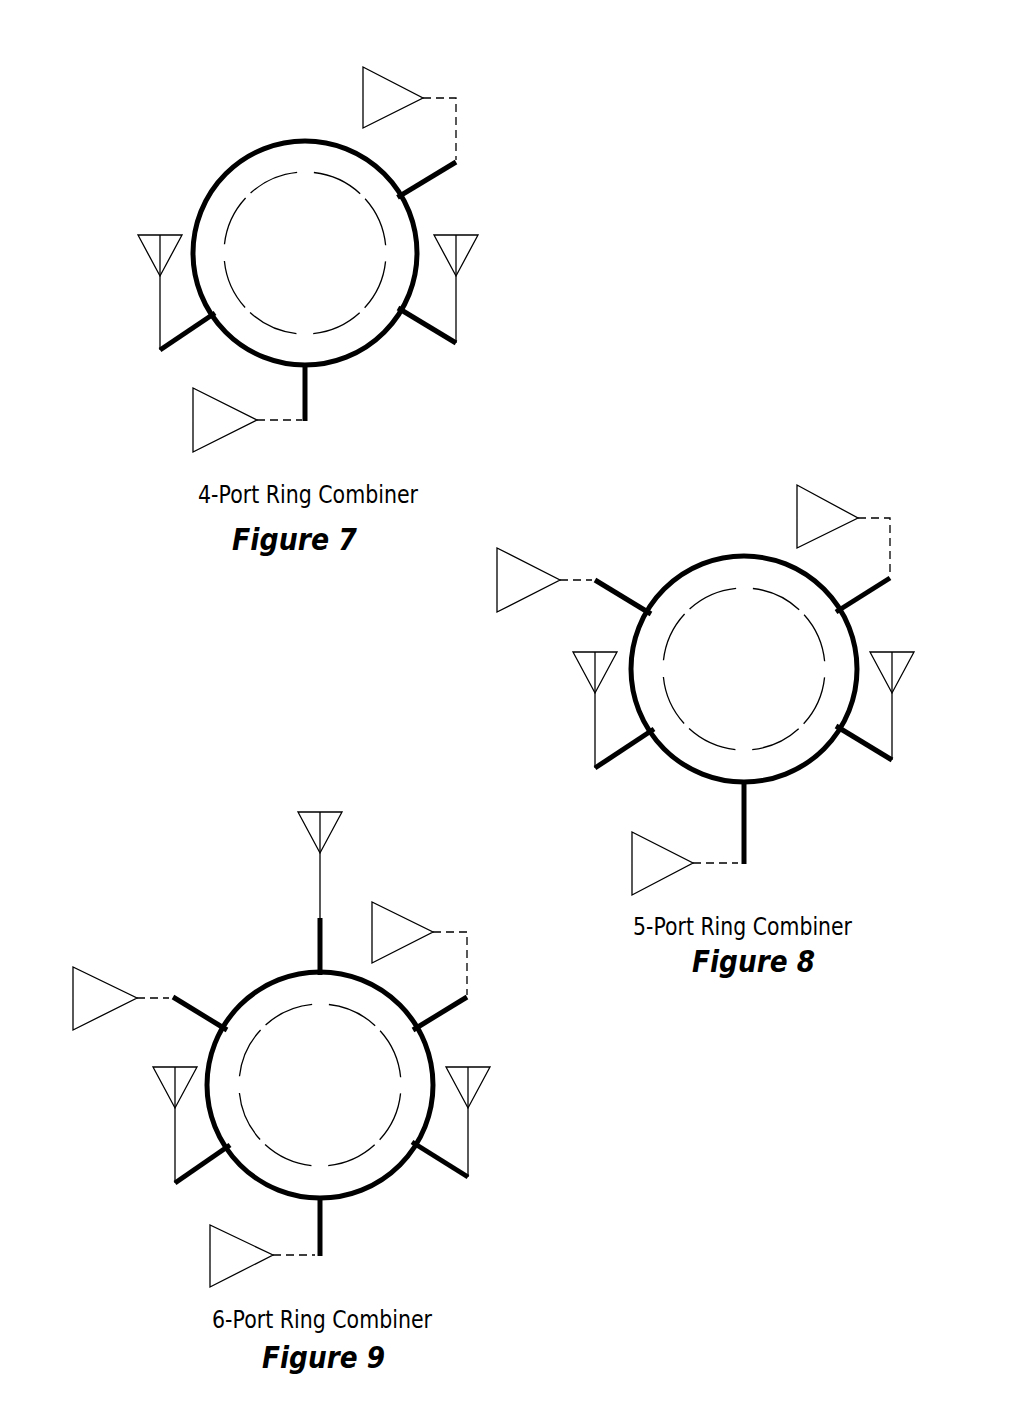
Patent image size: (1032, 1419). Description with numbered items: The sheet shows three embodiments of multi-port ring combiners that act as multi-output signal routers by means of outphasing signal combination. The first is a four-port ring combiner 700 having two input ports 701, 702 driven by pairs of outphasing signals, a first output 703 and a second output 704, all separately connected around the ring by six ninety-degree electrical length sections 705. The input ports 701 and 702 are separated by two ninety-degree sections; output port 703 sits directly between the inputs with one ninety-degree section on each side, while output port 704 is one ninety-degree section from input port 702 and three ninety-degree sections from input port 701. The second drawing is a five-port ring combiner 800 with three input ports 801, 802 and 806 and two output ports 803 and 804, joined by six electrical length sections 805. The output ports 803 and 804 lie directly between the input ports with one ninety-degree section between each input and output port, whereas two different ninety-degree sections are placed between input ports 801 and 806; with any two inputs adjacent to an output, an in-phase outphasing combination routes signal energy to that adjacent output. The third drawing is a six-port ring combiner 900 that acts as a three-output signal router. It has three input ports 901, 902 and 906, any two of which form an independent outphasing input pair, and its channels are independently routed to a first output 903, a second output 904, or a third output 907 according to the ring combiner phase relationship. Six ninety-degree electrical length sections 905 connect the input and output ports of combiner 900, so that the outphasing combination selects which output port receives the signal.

In FIG. 7, the 4-port ring combiner 700 is at (282, 108).
In FIG. 7, the input port 701 is at (393, 80).
In FIG. 7, the input port 702 is at (217, 445).
In FIG. 7, the first output 703 is at (475, 250).
In FIG. 7, the second output 704 is at (148, 258).
In FIG. 7, the 90-degree electrical length sections 705 is at (262, 177).
In FIG. 8, the 5-port ring combiner 800 is at (722, 528).
In FIG. 8, the input port 801 is at (823, 500).
In FIG. 8, the input port 802 is at (662, 878).
In FIG. 8, the output port 803 is at (905, 668).
In FIG. 8, the output port 804 is at (582, 675).
In FIG. 8, the electrical length sections 805 is at (700, 597).
In FIG. 8, the input port 806 is at (531, 565).
In FIG. 9, the 6-port ring combiner 900 is at (240, 960).
In FIG. 9, the input port 901 is at (400, 915).
In FIG. 9, the input port 902 is at (242, 1275).
In FIG. 9, the first output 903 is at (487, 1082).
In FIG. 9, the second output 904 is at (162, 1096).
In FIG. 9, the 90-degree electrical length sections 905 is at (363, 1157).
In FIG. 9, the input port 906 is at (105, 983).
In FIG. 9, the third output 907 is at (335, 830).